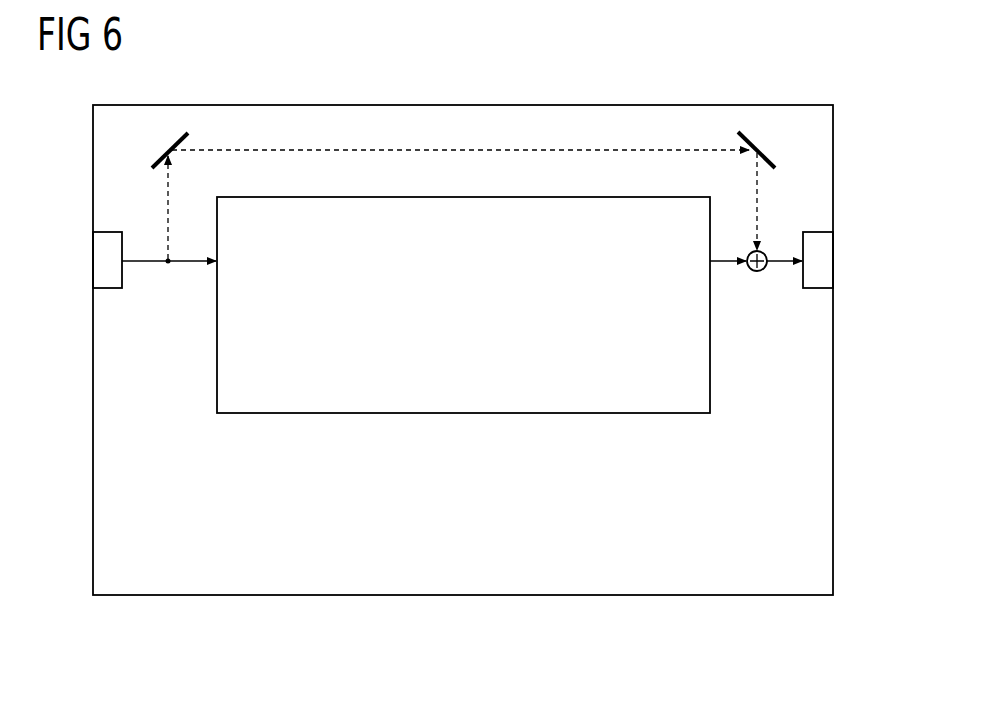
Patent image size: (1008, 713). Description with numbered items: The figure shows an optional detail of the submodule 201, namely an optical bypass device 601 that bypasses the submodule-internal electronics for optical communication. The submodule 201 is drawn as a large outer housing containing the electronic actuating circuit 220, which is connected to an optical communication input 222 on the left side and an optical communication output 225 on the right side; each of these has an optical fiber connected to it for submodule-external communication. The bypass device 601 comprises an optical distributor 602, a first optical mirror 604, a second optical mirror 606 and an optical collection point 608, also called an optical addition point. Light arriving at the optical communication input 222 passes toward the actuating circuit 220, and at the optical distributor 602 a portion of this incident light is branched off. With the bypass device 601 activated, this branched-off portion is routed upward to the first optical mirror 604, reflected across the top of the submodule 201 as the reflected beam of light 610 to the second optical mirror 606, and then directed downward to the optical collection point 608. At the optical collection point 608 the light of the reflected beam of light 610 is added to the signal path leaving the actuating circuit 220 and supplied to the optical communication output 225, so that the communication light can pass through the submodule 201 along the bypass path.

The submodule 201 is at (466, 597).
The actuating circuit 220 is at (466, 415).
The optical communication input 222 is at (105, 260).
The optical communication output 225 is at (815, 260).
The bypass device 601 is at (496, 126).
The optical distributor 602 is at (168, 264).
The first optical mirror 604 is at (182, 133).
The second optical mirror 606 is at (741, 132).
The optical collection point 608 is at (757, 272).
The reflected beam of light 610 is at (312, 150).